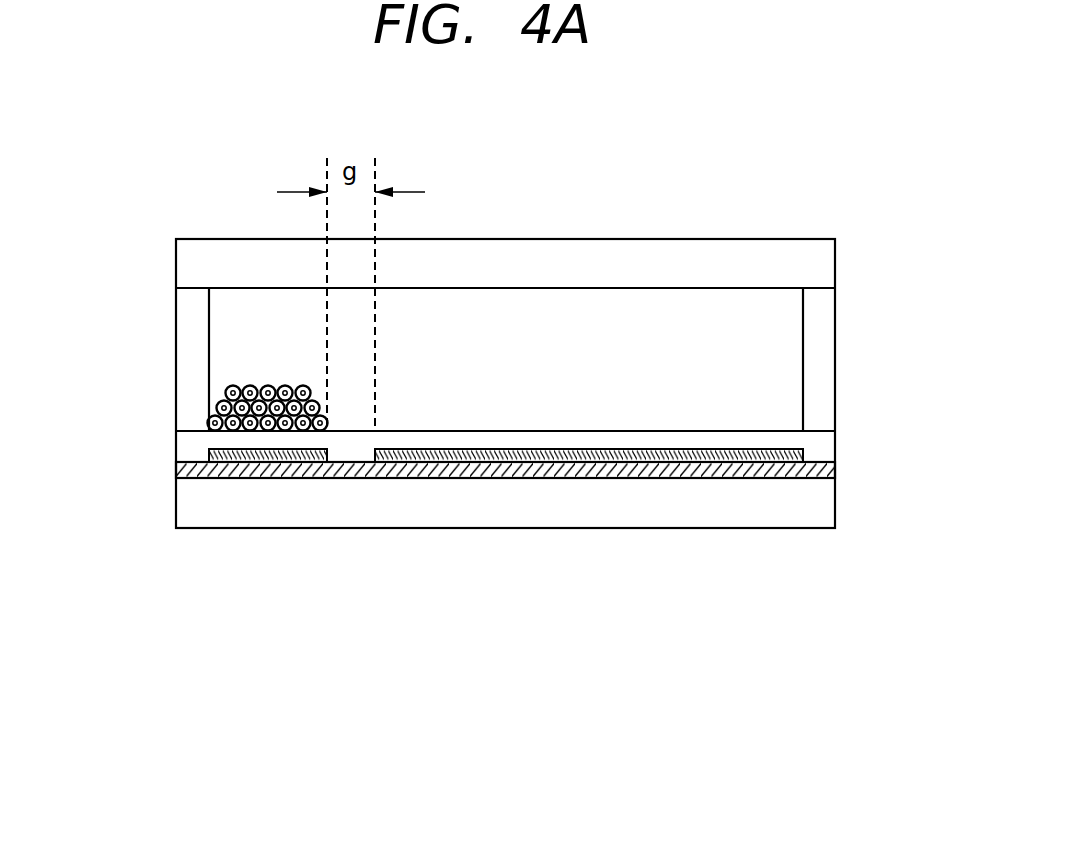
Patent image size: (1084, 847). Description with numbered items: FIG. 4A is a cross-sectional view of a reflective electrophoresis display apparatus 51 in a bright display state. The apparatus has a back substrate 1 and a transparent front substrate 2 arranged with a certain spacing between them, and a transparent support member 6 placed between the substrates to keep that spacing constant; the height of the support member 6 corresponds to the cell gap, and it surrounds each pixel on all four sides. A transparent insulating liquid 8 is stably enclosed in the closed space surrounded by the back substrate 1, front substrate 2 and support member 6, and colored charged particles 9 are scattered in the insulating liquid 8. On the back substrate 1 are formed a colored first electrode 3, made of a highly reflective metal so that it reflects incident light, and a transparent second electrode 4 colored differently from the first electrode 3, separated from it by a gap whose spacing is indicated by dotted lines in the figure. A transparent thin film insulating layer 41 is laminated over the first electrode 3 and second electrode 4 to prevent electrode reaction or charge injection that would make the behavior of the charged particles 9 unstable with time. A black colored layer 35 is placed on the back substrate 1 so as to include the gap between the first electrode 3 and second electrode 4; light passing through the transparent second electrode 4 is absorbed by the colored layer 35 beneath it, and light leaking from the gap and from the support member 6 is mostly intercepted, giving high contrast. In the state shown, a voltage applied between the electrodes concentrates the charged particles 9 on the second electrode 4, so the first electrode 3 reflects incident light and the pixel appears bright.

The reflective electrophoresis display apparatus 51 is at (720, 176).
The front substrate 2 is at (820, 270).
The support member 6 is at (823, 345).
The insulating liquid 8 is at (537, 303).
The back substrate 1 is at (798, 513).
The first electrode 3 is at (804, 453).
The second electrode 4 is at (217, 447).
The insulating layer 41 is at (720, 440).
The colored layer 35 is at (347, 475).
The charged particles 9 is at (227, 387).